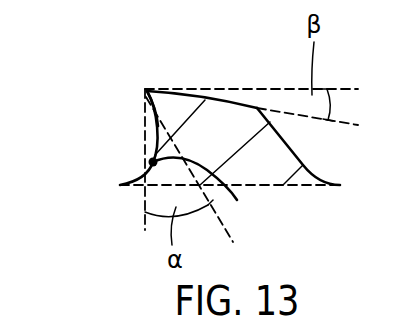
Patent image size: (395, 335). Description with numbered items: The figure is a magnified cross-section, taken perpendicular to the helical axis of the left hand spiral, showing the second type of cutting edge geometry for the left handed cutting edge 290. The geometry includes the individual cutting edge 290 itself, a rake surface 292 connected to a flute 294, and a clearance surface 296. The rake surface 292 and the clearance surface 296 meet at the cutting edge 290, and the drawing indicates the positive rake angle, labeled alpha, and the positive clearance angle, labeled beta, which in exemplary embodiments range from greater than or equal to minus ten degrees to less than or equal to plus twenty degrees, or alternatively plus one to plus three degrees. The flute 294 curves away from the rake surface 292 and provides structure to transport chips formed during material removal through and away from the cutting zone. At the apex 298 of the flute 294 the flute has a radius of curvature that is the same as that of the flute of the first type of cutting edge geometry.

The left handed cutting edge 290 is at (147, 91).
The rake surface 292 is at (150, 103).
The flute 294 is at (130, 147).
The clearance surface 296 is at (196, 96).
The apex 298 is at (237, 200).